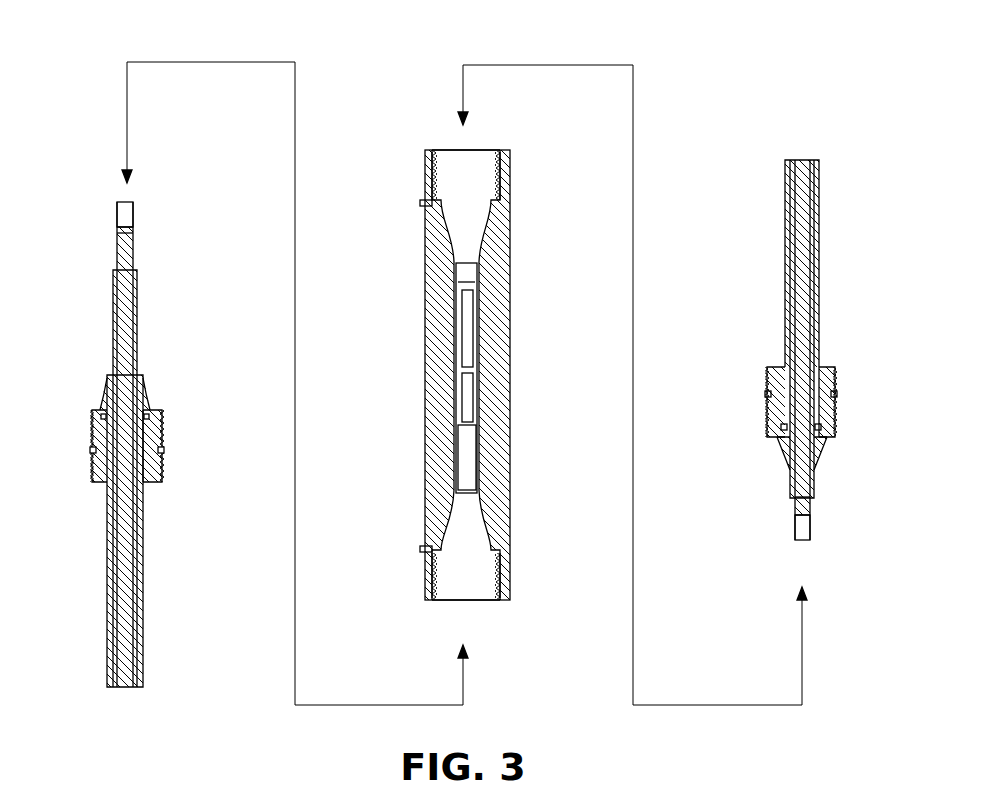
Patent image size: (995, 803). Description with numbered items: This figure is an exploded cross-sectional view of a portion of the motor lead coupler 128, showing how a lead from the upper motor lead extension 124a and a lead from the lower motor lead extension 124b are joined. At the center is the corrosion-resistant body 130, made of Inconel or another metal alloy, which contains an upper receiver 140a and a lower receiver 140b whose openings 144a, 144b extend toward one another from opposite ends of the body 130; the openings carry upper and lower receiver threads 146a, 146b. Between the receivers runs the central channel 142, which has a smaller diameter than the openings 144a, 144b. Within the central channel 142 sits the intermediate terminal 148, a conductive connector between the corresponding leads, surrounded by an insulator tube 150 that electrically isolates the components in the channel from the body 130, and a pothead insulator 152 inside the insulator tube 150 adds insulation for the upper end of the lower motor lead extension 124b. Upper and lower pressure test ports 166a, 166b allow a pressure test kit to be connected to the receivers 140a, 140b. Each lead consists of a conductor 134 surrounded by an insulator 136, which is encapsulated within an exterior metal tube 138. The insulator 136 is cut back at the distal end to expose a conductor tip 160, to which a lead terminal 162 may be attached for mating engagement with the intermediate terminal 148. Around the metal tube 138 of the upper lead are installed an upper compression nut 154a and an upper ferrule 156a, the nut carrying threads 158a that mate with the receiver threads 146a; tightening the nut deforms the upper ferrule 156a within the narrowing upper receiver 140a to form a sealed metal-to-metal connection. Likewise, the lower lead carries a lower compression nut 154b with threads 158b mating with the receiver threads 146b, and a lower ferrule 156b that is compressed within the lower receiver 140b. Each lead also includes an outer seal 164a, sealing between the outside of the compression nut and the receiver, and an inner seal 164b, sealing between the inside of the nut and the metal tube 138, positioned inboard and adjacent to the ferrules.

The upper motor lead extension 124a is at (848, 228).
The lower motor lead extension 124b is at (48, 364).
The motor lead coupler 128 is at (346, 81).
The body 130 is at (497, 250).
The conductor 134 is at (132, 248).
The insulator 136 is at (137, 278).
The metal tube 138 is at (140, 627).
The upper receiver 140a is at (488, 158).
The lower receiver 140b is at (485, 592).
The central channel 142 is at (462, 440).
The upper opening 144a is at (447, 148).
The lower opening 144b is at (445, 602).
The upper receiver threads 146a is at (430, 150).
The lower receiver threads 146b is at (508, 563).
The intermediate terminal 148 is at (468, 330).
The insulator tube 150 is at (479, 438).
The pothead insulator 152 is at (468, 383).
The upper compression nut 154a is at (828, 366).
The lower compression nut 154b is at (163, 470).
The upper ferrule 156a is at (826, 447).
The lower ferrule 156b is at (143, 395).
The threads 158a is at (837, 418).
The threads 158b is at (163, 427).
The conductor tip 160 is at (126, 240).
The lead terminal 162 is at (131, 207).
The outer seal 164a is at (91, 451).
The inner seal 164b is at (98, 414).
The upper pressure test port 166a is at (422, 199).
The lower pressure test port 166b is at (422, 547).